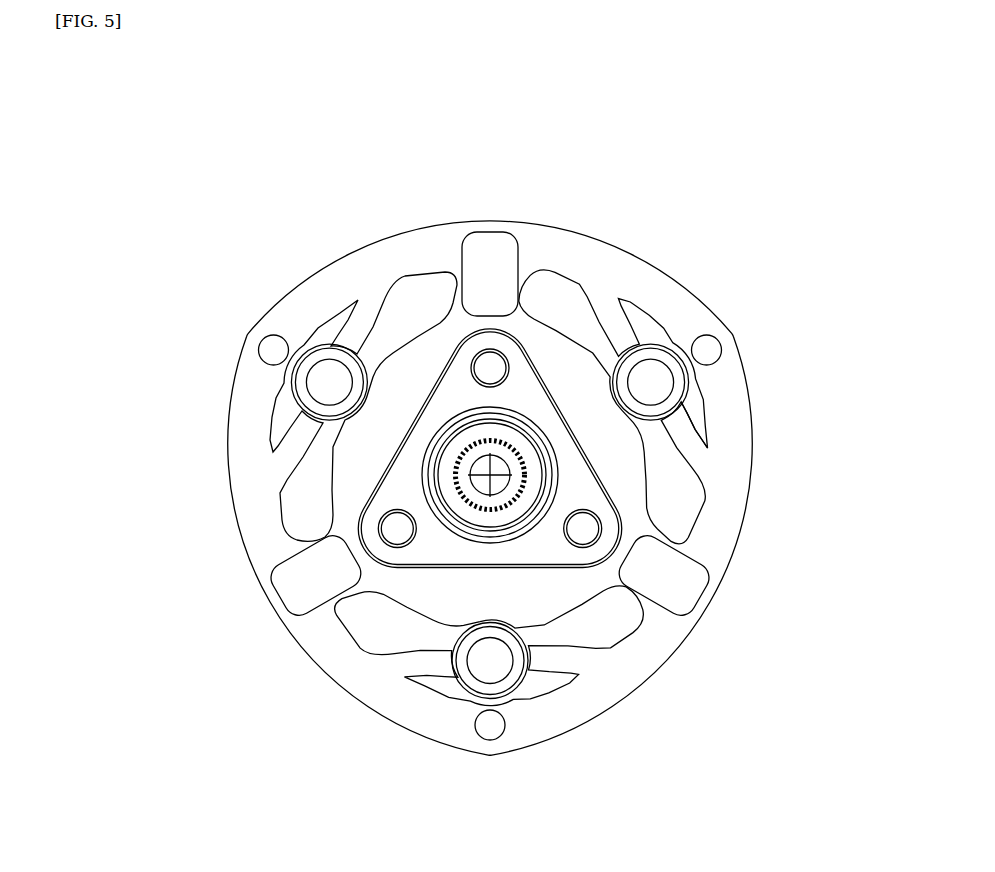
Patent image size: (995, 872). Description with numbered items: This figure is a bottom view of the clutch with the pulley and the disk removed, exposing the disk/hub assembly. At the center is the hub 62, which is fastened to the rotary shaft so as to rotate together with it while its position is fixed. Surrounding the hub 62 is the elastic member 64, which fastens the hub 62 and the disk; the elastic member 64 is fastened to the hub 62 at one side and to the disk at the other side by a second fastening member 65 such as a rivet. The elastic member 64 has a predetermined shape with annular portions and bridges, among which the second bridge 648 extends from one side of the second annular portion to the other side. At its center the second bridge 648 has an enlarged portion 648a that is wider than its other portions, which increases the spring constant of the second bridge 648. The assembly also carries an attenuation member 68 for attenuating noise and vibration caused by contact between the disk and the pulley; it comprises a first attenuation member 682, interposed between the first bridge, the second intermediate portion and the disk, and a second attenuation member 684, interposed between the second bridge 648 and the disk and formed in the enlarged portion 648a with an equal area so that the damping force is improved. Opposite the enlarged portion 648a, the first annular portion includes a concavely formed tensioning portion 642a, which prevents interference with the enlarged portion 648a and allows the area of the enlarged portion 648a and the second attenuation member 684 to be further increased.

The hub 62 is at (450, 548).
The elastic member 64 is at (260, 512).
The second fastening member 65 is at (277, 350).
The attenuation member 68 is at (518, 118).
The first attenuation member 682 is at (490, 262).
The second attenuation member 684 is at (650, 380).
The tensioning portion 642a is at (682, 390).
The second bridge 648 is at (700, 422).
The enlarged portion 648a is at (676, 348).